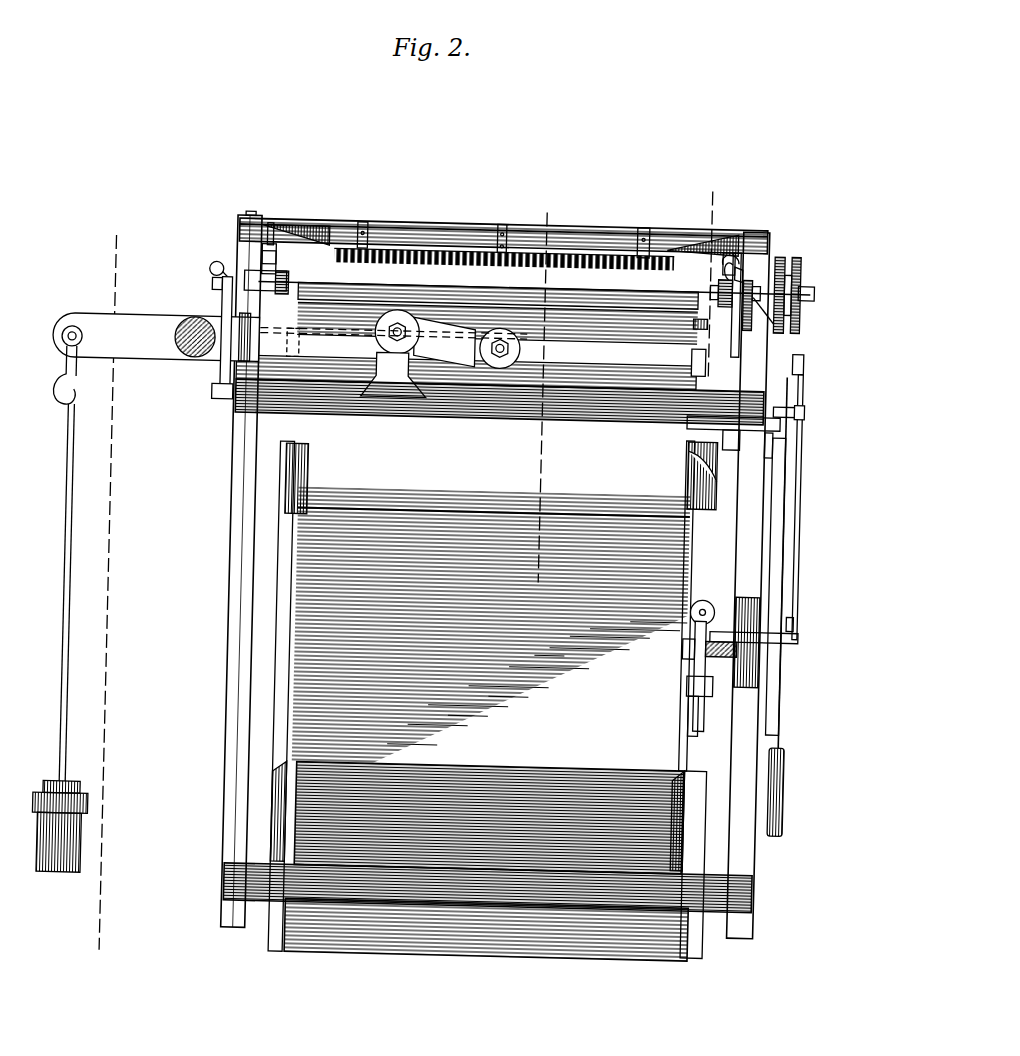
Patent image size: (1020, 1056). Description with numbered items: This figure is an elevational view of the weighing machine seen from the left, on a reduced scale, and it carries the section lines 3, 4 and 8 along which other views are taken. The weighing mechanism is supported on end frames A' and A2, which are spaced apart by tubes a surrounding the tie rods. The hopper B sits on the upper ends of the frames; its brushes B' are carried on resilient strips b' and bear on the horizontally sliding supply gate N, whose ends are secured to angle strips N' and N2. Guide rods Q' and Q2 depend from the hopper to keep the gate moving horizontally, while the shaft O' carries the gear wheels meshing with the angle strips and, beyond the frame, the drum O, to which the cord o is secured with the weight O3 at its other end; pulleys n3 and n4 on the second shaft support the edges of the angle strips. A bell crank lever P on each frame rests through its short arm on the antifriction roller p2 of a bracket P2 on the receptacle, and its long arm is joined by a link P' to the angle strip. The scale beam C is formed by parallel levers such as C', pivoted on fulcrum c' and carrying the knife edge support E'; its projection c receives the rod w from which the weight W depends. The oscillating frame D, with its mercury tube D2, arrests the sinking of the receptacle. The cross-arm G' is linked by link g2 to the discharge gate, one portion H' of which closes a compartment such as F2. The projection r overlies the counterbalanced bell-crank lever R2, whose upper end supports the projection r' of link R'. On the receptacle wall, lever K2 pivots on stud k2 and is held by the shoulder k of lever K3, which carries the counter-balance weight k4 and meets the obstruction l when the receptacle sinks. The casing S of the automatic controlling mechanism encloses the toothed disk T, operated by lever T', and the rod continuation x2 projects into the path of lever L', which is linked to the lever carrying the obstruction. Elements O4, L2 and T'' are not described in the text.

The section line 3- 3 is at (137, 232).
The section line 4- 4 is at (567, 192).
The section line 8- 8 is at (726, 172).
The end frame A' is at (207, 568).
The end frame A2 is at (785, 714).
The link g2 is at (290, 562).
The hopper B is at (504, 210).
The resilient strip b' is at (504, 207).
The brush B' is at (505, 222).
The sliding gate N is at (488, 222).
The angle strip N' is at (315, 205).
The angle strip N2 is at (732, 271).
The link P' is at (537, 261).
The guide rod Q' is at (267, 197).
The pulley n3 is at (258, 275).
The weight O3 is at (285, 272).
The projection r is at (497, 313).
The scale lever C' is at (423, 382).
The knife edge support E' is at (513, 358).
The fulcrum c' is at (393, 389).
The cross-arm G' is at (387, 343).
The scale beam C is at (156, 334).
The projection c is at (84, 308).
The rod w is at (79, 522).
The weight W is at (100, 835).
The tube D2 is at (210, 268).
The oscillating frame D is at (225, 365).
The bell crank lever P is at (507, 384).
The bell-crank lever R2 is at (702, 341).
The tube a is at (615, 401).
The bracket P2 is at (284, 447).
The compartment F2 is at (568, 712).
The discharge gate portion H' is at (487, 881).
The drum O is at (806, 289).
The shaft O' is at (833, 301).
The gear O4 is at (716, 273).
The guide rod Q2 is at (733, 245).
The pulley n4 is at (739, 276).
The projection r' is at (797, 316).
The block L2 is at (807, 356).
The lever T' is at (823, 508).
The cross piece T'' is at (795, 398).
The rod continuation x2 is at (808, 401).
The casing S is at (778, 427).
The antifriction roller p2 is at (778, 424).
The lever L' is at (810, 587).
The lever K3 is at (699, 592).
The counter-balance weight k4 is at (706, 603).
The lever K2 is at (717, 621).
The disk T is at (772, 655).
The cord o is at (803, 600).
The obstruction l is at (738, 635).
The shoulder k is at (727, 681).
The stud k2 is at (720, 727).